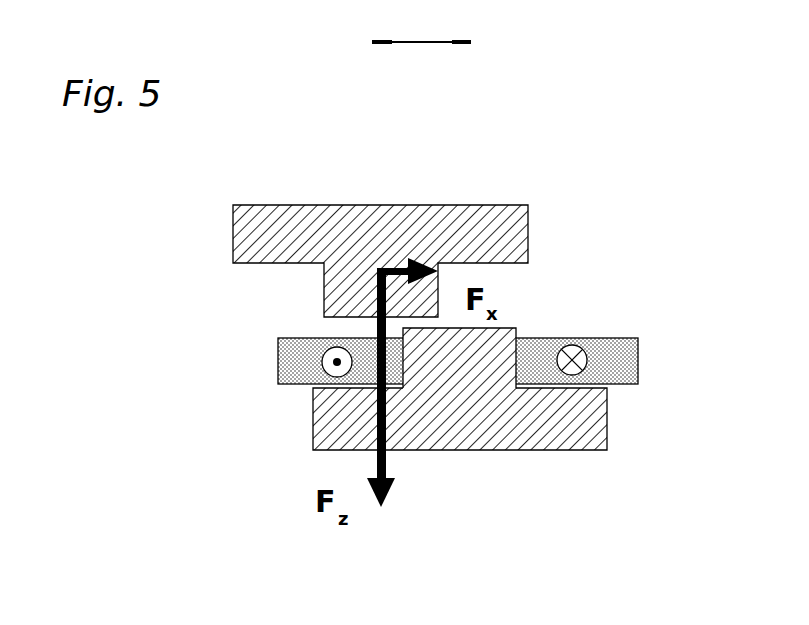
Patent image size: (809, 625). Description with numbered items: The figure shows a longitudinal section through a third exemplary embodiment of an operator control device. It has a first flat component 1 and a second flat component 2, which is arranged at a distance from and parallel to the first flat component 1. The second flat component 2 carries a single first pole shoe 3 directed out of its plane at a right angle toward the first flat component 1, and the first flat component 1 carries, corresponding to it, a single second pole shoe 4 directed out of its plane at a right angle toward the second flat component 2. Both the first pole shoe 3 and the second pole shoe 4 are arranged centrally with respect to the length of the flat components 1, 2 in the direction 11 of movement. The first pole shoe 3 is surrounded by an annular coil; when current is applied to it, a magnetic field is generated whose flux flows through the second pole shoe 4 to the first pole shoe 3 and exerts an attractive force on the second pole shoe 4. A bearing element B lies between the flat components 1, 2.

The first flat component 1 is at (419, 253).
The second flat component 2 is at (573, 447).
The first pole shoe 3 is at (512, 327).
The second pole shoe 4 is at (333, 298).
The direction of movement 11 is at (425, 43).
The bearing bar B is at (642, 350).